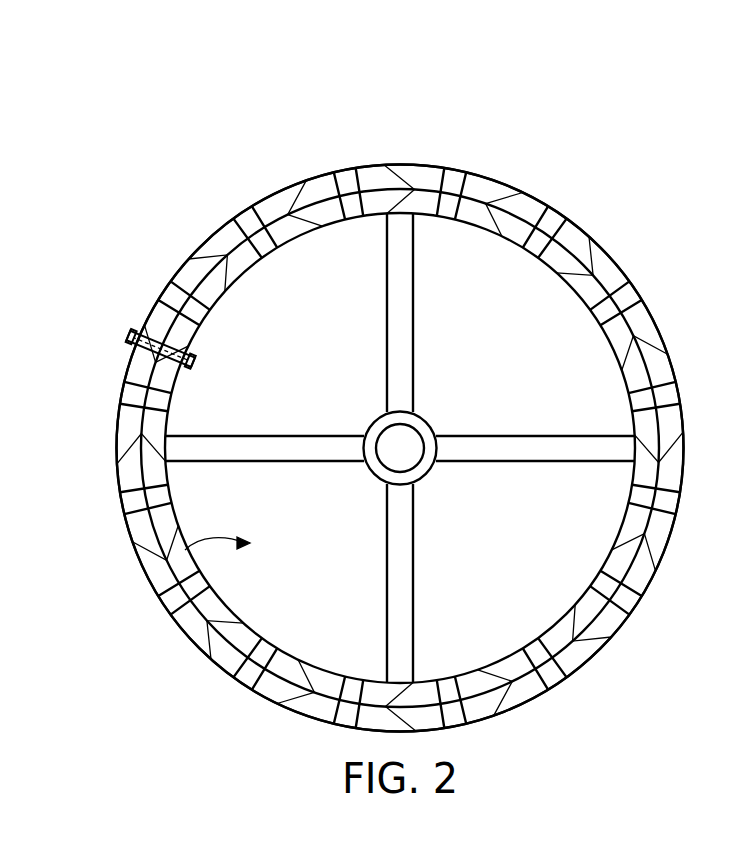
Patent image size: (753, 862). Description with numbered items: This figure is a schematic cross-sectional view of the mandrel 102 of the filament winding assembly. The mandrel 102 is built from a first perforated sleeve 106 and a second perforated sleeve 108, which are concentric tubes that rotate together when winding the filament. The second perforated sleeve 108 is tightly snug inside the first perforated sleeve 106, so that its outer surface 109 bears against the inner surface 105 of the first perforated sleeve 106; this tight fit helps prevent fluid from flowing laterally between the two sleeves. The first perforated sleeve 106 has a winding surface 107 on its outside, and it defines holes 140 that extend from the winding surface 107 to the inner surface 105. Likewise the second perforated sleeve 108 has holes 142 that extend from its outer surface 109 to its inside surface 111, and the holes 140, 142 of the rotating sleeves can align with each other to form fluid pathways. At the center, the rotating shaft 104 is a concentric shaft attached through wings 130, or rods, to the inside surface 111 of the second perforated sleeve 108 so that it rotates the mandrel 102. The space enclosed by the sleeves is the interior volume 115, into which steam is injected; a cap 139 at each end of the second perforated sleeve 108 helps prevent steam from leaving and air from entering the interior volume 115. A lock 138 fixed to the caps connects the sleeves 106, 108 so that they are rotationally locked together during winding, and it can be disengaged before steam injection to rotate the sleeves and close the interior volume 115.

The mandrel 102 is at (320, 84).
The rotating shaft 104 is at (455, 415).
The inner surface 105 is at (228, 624).
The first perforated sleeve 106 is at (290, 198).
The winding surface 107 is at (505, 185).
The second perforated sleeve 108 is at (493, 222).
The outer surface 109 is at (135, 450).
The inside surface 111 is at (567, 283).
The interior volume 115 is at (153, 582).
The wings 130 is at (388, 310).
The lock 138 is at (193, 362).
The cap 139 is at (520, 562).
The holes 140 is at (555, 220).
The holes 142 is at (642, 400).